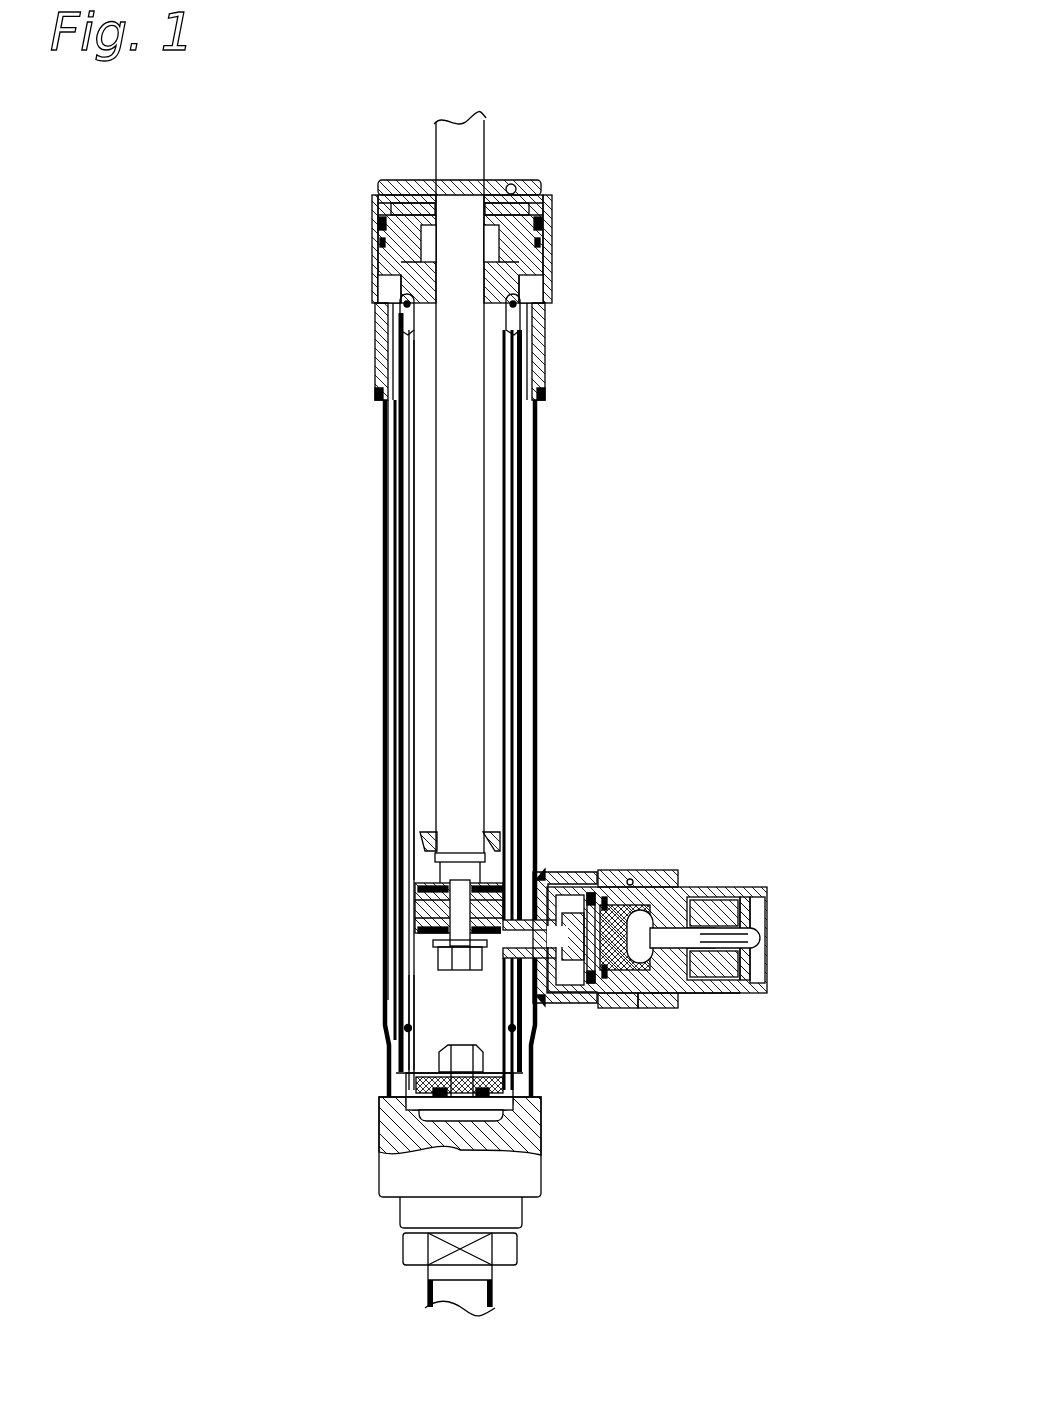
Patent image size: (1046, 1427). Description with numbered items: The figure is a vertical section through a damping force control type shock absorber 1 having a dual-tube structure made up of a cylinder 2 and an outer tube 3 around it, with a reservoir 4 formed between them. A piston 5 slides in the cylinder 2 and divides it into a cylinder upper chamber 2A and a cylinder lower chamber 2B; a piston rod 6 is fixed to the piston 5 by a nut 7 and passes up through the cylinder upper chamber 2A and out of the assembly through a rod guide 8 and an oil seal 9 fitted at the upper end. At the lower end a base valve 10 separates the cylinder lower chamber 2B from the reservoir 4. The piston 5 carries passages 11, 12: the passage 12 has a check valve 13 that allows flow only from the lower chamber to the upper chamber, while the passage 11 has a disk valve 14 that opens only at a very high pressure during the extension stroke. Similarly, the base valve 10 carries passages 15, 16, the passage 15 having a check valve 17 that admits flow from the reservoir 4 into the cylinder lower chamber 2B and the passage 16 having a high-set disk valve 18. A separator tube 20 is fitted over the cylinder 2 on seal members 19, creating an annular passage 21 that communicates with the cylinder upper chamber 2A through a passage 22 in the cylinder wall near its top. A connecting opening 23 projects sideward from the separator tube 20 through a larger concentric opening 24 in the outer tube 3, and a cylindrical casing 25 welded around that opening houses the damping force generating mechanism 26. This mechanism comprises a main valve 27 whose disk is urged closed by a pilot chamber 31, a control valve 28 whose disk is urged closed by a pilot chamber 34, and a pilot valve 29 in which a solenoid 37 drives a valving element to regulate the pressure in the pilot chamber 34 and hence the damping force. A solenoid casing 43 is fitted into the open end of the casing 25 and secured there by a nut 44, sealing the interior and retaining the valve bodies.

The damping force control type shock absorber 1 is at (556, 705).
The cylinder 2 is at (510, 438).
The cylinder upper chamber 2A is at (423, 700).
The cylinder lower chamber 2B is at (403, 1010).
The outer tube 3 is at (538, 480).
The reservoir 4 is at (388, 498).
The piston 5 is at (410, 918).
The piston rod 6 is at (447, 147).
The nut 7 is at (438, 997).
The rod guide 8 is at (412, 270).
The oil seal 9 is at (507, 173).
The base valve 10 is at (541, 1097).
The passage 11 is at (413, 898).
The passage 12 is at (562, 870).
The check valve 13 is at (543, 867).
The disk valve 14 is at (440, 960).
The passage 15 is at (379, 1137).
The passage 16 is at (538, 1157).
The check valve 17 is at (450, 1072).
The disk valve 18 is at (516, 1100).
The seal members 19 is at (402, 308).
The separator tube 20 is at (400, 595).
The annular passage 21 is at (513, 530).
The passage 22 is at (522, 360).
The connecting opening 23 is at (578, 883).
The opening 24 is at (540, 1007).
The casing 25 is at (597, 877).
The damping force generating mechanism 26 is at (702, 907).
The main valve 27 is at (613, 880).
The control valve 28 is at (632, 877).
The pilot valve 29 is at (680, 925).
The pilot chamber 31 is at (605, 1008).
The pilot chamber 34 is at (642, 1008).
The solenoid 37 is at (742, 920).
The solenoid casing 43 is at (685, 1002).
The nut 44 is at (662, 1008).